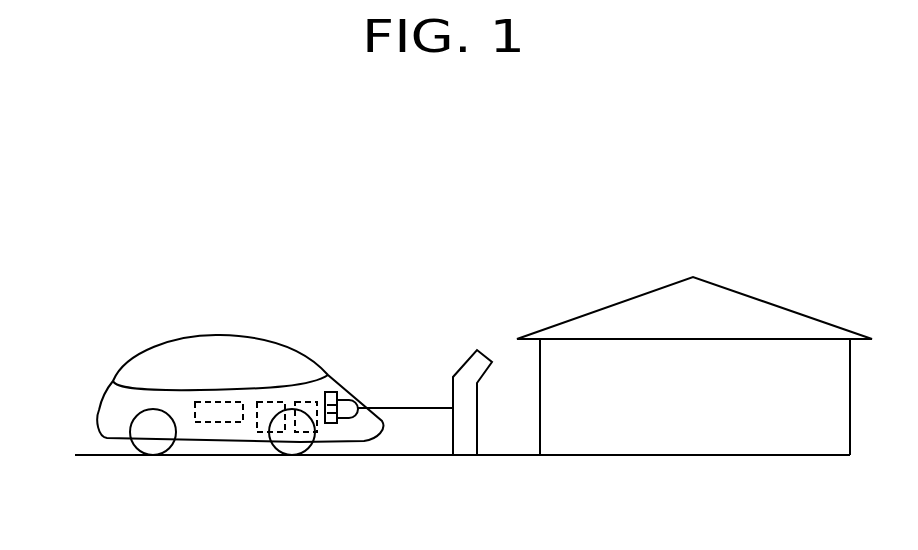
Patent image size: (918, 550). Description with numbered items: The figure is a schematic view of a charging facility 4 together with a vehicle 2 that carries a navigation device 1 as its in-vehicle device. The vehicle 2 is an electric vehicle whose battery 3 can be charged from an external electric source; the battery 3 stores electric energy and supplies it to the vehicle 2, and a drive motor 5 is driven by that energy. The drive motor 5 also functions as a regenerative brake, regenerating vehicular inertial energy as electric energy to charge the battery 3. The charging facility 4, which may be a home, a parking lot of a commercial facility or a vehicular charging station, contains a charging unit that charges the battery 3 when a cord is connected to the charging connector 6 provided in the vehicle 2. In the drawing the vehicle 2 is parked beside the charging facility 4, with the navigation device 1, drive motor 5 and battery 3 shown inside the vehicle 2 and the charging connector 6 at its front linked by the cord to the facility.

The navigation device 1 is at (207, 422).
The vehicle 2 is at (117, 393).
The battery 3 is at (317, 432).
The charging facility 4 is at (800, 435).
The drive motor 5 is at (258, 430).
The charging connector 6 is at (328, 423).